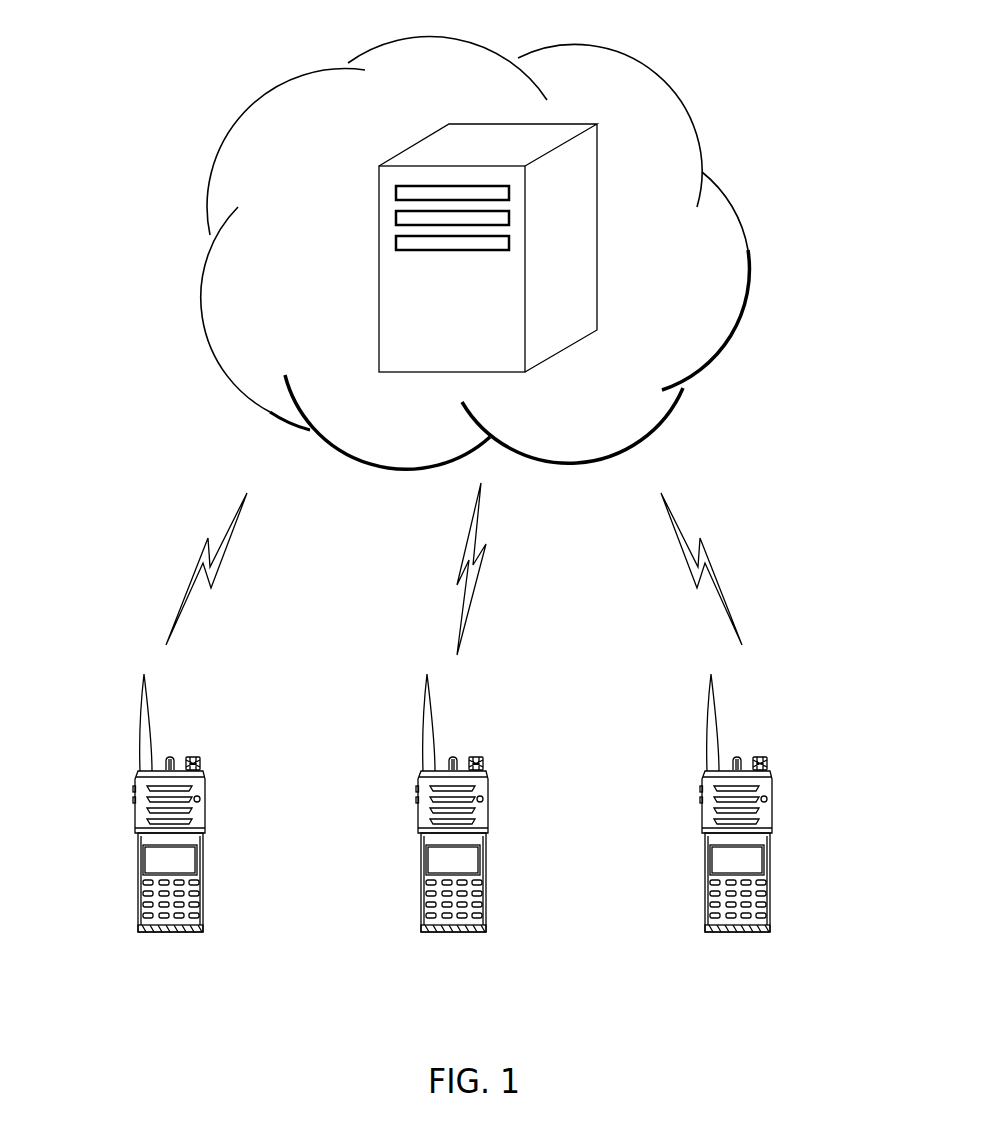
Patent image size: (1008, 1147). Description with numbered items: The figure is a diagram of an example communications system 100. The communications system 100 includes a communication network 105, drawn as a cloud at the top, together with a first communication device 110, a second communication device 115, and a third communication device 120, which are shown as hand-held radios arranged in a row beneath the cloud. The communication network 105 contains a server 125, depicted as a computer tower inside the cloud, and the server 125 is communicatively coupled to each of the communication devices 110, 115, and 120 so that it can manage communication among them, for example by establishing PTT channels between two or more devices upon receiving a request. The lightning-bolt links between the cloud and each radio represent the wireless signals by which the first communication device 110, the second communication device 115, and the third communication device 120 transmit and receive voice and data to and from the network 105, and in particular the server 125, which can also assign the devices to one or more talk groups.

The communications system 100 is at (140, 442).
The communication network 105 is at (236, 104).
The server 125 is at (379, 268).
The first communication device 110 is at (170, 932).
The second communication device 115 is at (453, 932).
The third communication device 120 is at (737, 932).